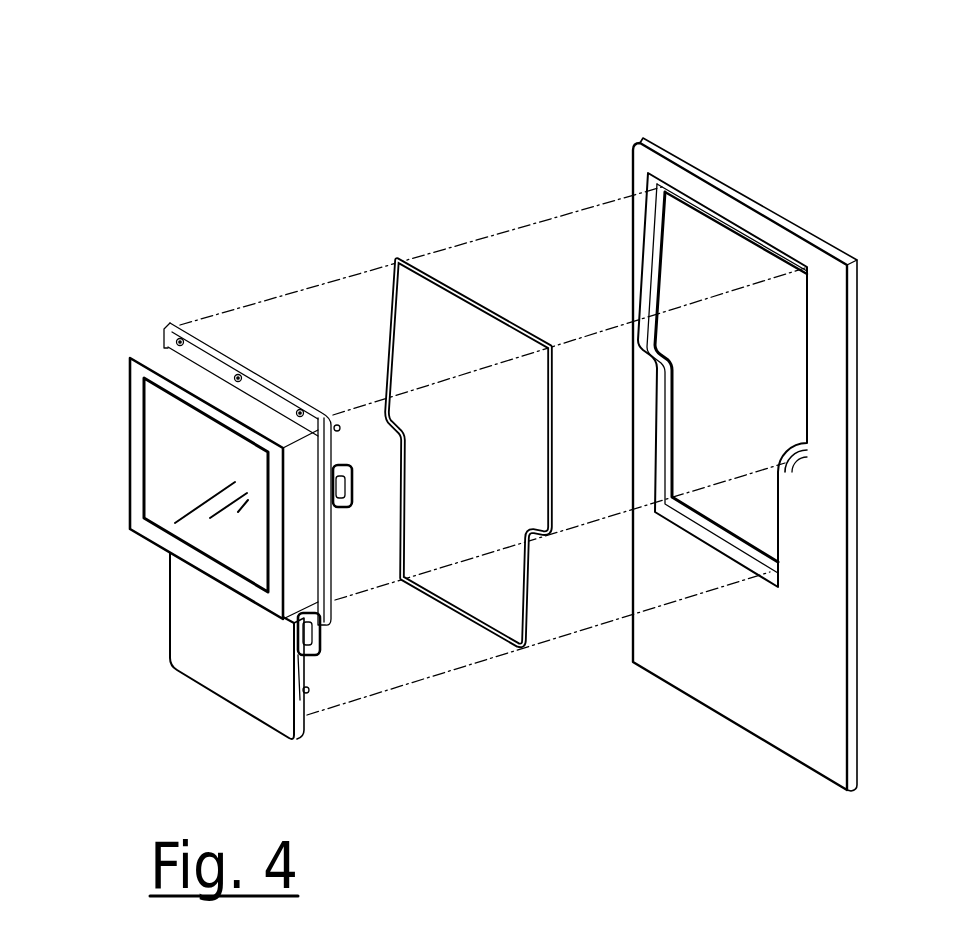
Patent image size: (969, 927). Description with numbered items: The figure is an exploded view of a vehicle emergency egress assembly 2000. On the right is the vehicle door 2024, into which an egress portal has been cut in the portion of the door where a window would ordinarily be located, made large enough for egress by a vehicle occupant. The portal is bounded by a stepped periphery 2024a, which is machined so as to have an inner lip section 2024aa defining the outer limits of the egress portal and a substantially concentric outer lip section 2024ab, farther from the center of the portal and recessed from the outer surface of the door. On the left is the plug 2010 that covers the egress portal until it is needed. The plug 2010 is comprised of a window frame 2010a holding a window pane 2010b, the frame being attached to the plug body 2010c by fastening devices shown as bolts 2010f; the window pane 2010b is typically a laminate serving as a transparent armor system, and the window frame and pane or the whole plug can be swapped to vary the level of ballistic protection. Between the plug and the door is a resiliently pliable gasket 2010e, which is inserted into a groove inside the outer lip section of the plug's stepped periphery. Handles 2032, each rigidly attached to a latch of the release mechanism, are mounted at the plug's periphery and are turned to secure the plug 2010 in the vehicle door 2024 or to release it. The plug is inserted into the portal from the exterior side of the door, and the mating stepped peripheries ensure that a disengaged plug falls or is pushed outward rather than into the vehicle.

The vehicle emergency egress assembly 2000 is at (280, 78).
The plug 2010 is at (465, 198).
The window frame 2010a is at (162, 360).
The window pane 2010b is at (236, 467).
The plug body 2010c is at (264, 664).
The gasket 2010e is at (447, 283).
The bolts 2010f is at (167, 328).
The handle 2032 is at (348, 508).
The vehicle door 2024 is at (745, 464).
The stepped periphery 2024a is at (705, 493).
The inner lip section 2024aa is at (735, 535).
The outer lip section 2024ab is at (700, 530).